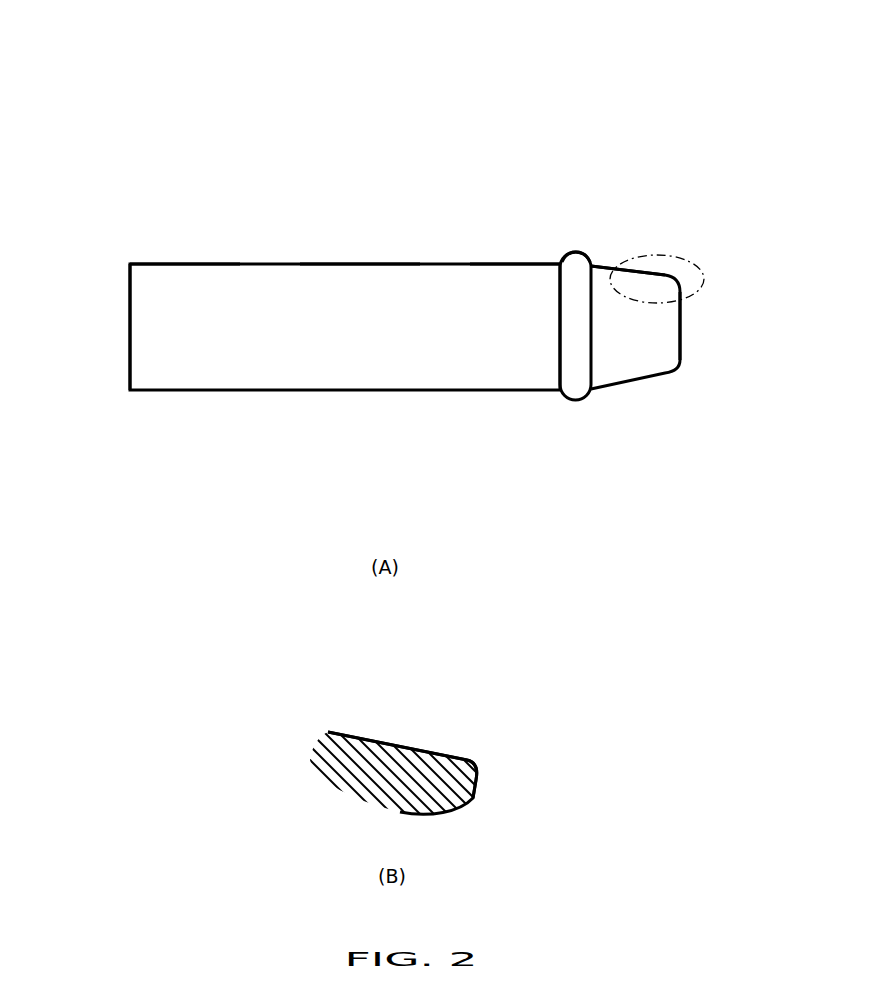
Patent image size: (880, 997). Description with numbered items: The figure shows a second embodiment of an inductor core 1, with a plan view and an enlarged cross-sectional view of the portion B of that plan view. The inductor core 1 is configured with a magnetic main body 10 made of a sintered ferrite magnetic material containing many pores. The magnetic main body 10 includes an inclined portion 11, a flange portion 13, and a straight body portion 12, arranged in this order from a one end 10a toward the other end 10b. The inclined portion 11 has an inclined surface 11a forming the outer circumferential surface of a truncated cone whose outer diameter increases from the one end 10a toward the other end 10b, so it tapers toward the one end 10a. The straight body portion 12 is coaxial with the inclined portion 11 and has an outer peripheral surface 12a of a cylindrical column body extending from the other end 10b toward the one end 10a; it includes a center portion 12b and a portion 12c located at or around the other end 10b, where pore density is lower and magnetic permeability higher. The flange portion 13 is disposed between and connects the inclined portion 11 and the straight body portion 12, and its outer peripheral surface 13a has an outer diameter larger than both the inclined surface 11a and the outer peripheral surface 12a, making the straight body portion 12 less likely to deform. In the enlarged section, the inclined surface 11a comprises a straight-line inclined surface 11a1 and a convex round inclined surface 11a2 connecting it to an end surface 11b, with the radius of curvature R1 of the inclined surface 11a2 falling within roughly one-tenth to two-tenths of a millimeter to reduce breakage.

The inductor core 1 is at (629, 129).
The magnetic main body 10 is at (352, 470).
The one end 10a is at (682, 326).
The other end 10b is at (130, 323).
The inclined portion 11 is at (632, 350).
The inclined surface 11a is at (600, 268).
The inclined surface 11a1 is at (395, 742).
The inclined surface 11a2 is at (476, 773).
The end surface 11b is at (474, 800).
The straight body portion 12 is at (368, 360).
The outer peripheral surface 12a is at (357, 262).
The center portion 12b is at (487, 262).
The portion 12c is at (153, 262).
The flange portion 13 is at (571, 355).
The outer peripheral surface 13a is at (580, 240).
The portion B is at (665, 256).
The radius of curvature R1 is at (467, 761).